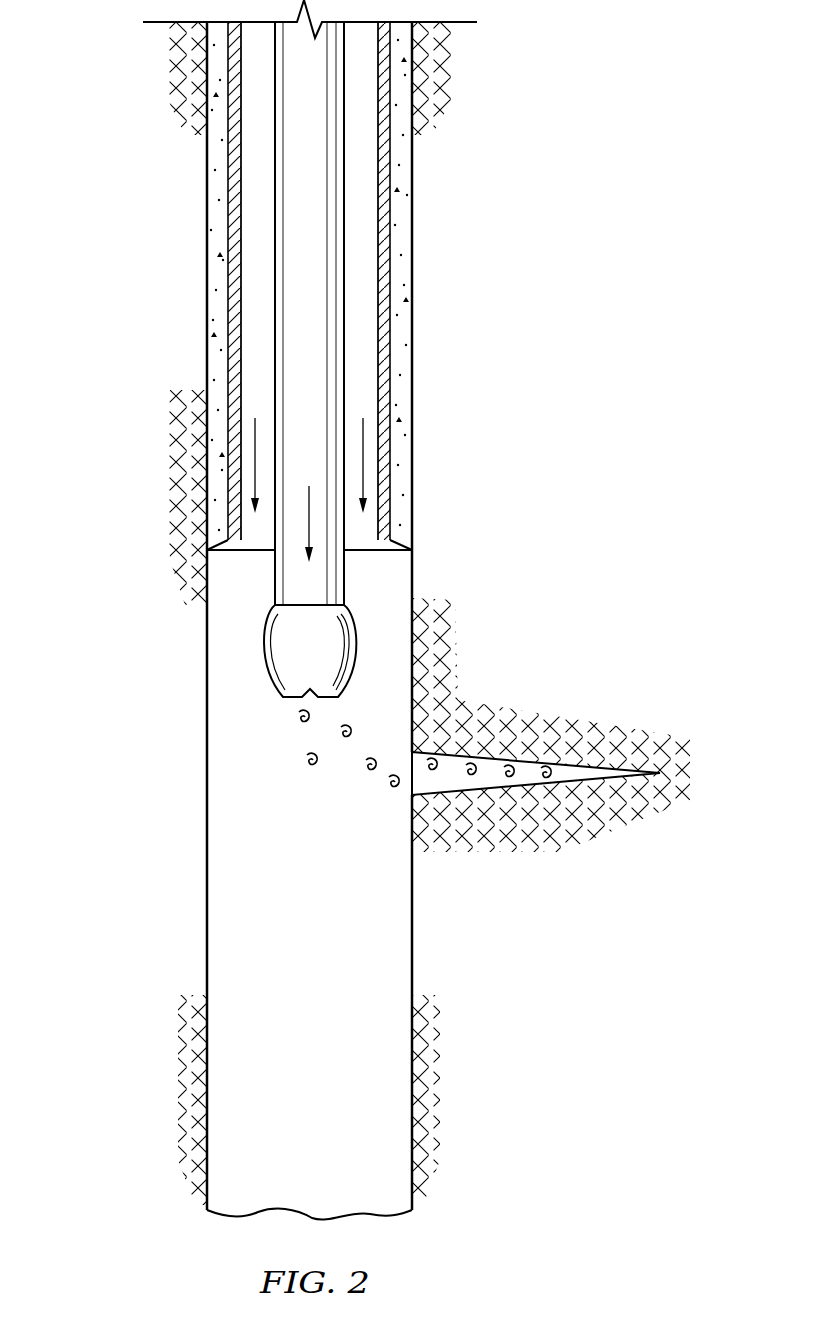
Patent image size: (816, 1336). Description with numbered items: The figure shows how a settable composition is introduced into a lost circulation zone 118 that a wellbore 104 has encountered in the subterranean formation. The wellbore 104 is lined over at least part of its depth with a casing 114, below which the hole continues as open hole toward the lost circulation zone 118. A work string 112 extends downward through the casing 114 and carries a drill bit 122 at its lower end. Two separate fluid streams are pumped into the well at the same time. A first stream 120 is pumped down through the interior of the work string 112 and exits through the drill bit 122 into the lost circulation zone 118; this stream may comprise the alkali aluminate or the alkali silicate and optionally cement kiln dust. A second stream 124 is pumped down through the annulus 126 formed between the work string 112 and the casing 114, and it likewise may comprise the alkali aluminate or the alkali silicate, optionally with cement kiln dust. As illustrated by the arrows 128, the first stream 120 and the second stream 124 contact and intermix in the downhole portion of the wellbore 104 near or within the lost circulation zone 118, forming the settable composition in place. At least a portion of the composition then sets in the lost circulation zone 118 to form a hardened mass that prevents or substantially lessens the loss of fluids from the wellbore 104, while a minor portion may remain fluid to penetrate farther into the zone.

The wellbore 104 is at (196, 252).
The work string 112 is at (343, 267).
The casing 114 is at (227, 188).
The lost circulation zone 118 is at (634, 717).
The first stream 120 is at (309, 525).
The drill bit 122 is at (350, 625).
The second stream 124 is at (257, 463).
The annulus 126 is at (260, 227).
The arrows 128 is at (388, 785).